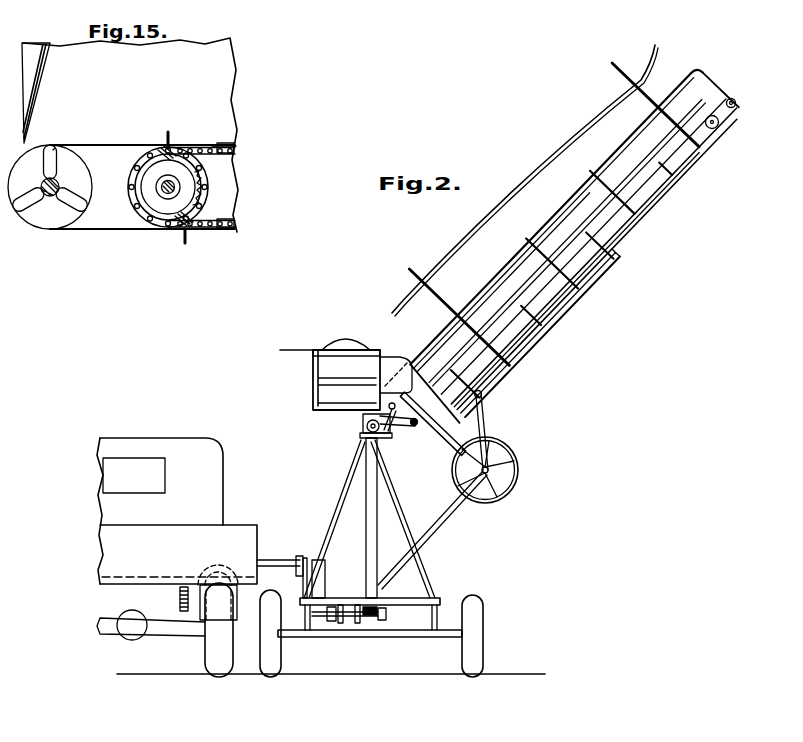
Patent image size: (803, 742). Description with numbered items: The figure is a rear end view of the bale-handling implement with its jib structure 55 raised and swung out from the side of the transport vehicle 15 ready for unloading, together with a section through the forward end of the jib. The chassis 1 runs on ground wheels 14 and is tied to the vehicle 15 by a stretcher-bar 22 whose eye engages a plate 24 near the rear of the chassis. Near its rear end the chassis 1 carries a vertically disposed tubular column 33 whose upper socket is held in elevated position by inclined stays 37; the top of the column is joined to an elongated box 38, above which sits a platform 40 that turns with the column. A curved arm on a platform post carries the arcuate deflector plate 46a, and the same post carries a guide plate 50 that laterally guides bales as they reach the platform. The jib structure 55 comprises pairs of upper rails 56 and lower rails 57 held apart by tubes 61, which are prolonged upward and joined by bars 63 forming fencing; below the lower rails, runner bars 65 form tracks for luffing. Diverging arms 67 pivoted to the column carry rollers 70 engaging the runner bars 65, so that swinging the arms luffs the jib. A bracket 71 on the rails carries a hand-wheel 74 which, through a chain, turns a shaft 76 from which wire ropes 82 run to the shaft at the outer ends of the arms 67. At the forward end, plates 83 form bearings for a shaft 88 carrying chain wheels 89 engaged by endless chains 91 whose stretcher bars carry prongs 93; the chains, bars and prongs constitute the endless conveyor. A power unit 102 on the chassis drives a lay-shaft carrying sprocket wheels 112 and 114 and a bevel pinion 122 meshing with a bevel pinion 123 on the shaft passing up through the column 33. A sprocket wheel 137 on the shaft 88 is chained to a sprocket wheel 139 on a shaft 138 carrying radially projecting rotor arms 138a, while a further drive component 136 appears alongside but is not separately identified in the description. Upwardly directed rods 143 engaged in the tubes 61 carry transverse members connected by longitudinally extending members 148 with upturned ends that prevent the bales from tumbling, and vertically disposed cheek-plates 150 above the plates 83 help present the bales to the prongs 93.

In FIG. 2, the chassis 1 is at (440, 574).
In FIG. 2, the ground wheels 14 is at (279, 660).
In FIG. 2, the transport vehicle 15 is at (148, 433).
In FIG. 2, the stretcher-bar 22 is at (288, 558).
In FIG. 2, the plate 24 is at (302, 575).
In FIG. 2, the rotatable column 33 is at (366, 524).
In FIG. 2, the inclined stays 37 is at (342, 494).
In FIG. 2, the elongated box 38 is at (362, 430).
In FIG. 2, the platform 40 is at (313, 402).
In FIG. 2, the deflector plate 46a is at (346, 343).
In FIG. 2, the guide plate 50 is at (388, 356).
In FIG. 15, the jib structure 55 is at (55, 40).
In FIG. 2, the jib structure 55 is at (622, 237).
In FIG. 15, the upper rail 56 is at (225, 146).
In FIG. 2, the upper rail 56 is at (615, 264).
In FIG. 15, the lower rail 57 is at (221, 228).
In FIG. 2, the lower rail 57 is at (588, 268).
In FIG. 2, the tubes 61 is at (662, 120).
In FIG. 2, the longitudinally extending bars 63 is at (557, 230).
In FIG. 2, the runner bars 65 is at (563, 322).
In FIG. 2, the diverging arms 67 is at (427, 514).
In FIG. 2, the rollers 70 is at (484, 400).
In FIG. 2, the bracket 71 is at (452, 478).
In FIG. 2, the hand-wheel 74 is at (518, 482).
In FIG. 2, the rotatable shaft 76 is at (440, 433).
In FIG. 2, the wire ropes 82 is at (486, 430).
In FIG. 15, the plates 83 is at (107, 144).
In FIG. 15, the transversely disposed shaft 88 is at (162, 186).
In FIG. 15, the chain wheels 89 is at (143, 203).
In FIG. 15, the endless chains 91 is at (196, 146).
In FIG. 15, the prongs 93 is at (165, 138).
In FIG. 2, the power unit 102 is at (326, 578).
In FIG. 2, the sprocket wheel 112 is at (358, 626).
In FIG. 2, the sprocket-wheel 114 is at (340, 626).
In FIG. 2, the bevel pinion 122 is at (388, 618).
In FIG. 2, the bevel pinion 123 is at (373, 607).
In FIG. 2, the base plate 136 is at (362, 438).
In FIG. 2, the sprocket wheel 137 is at (713, 129).
In FIG. 15, the rotatable shaft 138 is at (58, 205).
In FIG. 15, the rotor arms 138a is at (56, 150).
In FIG. 2, the sprocket wheel 139 is at (735, 108).
In FIG. 2, the upwardly directed rods 143 is at (617, 70).
In FIG. 2, the longitudinally extending members 148 is at (540, 186).
In FIG. 2, the cheek-plates 150 is at (683, 74).